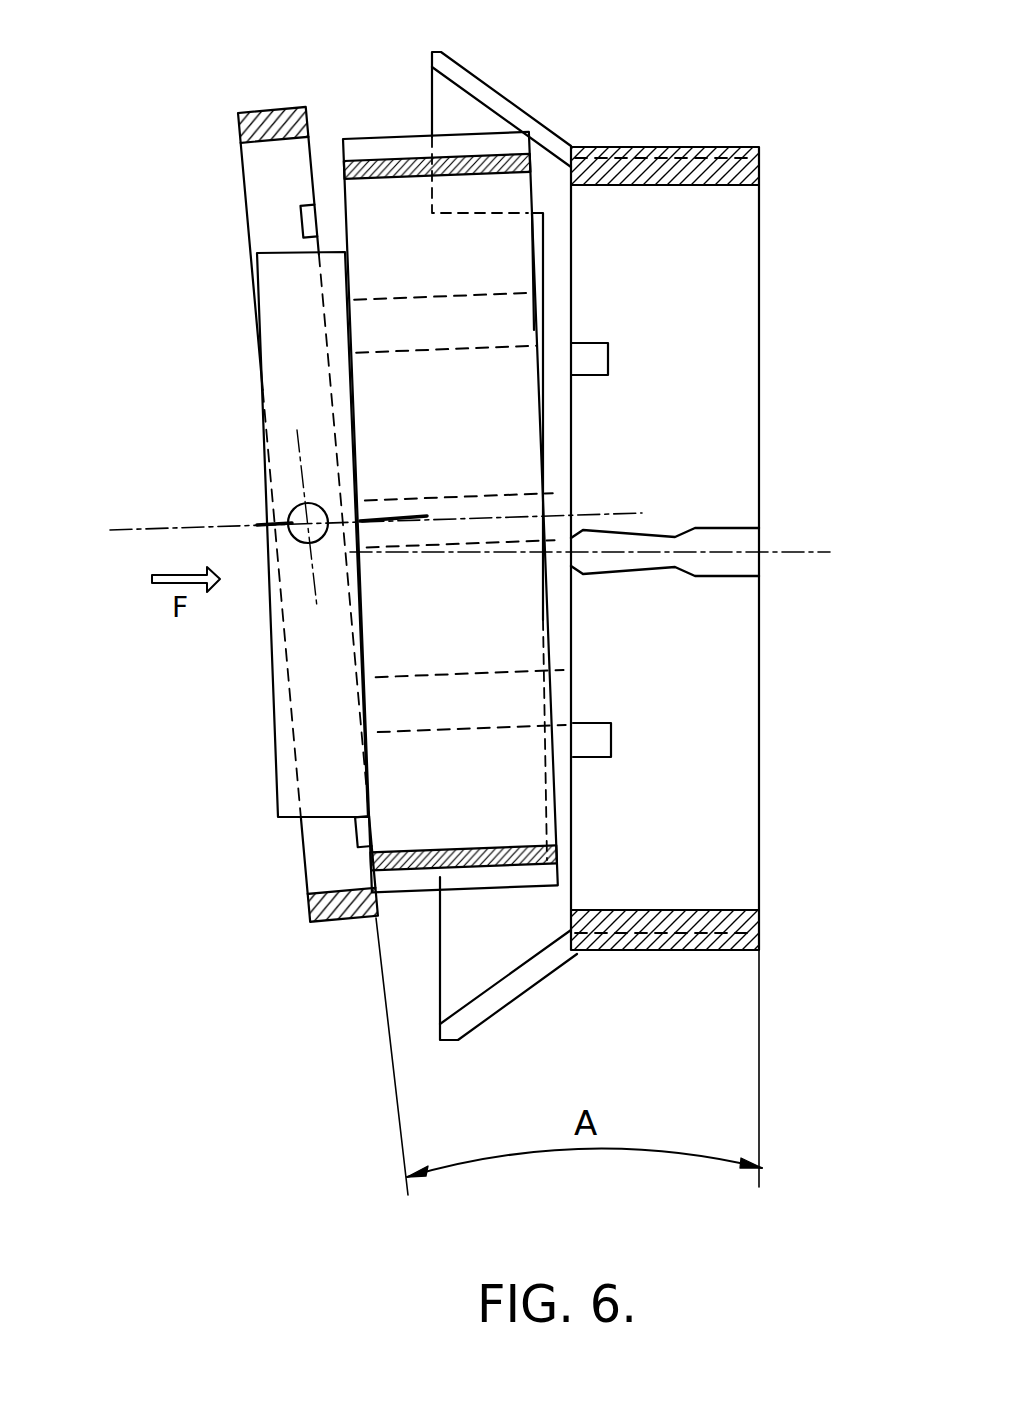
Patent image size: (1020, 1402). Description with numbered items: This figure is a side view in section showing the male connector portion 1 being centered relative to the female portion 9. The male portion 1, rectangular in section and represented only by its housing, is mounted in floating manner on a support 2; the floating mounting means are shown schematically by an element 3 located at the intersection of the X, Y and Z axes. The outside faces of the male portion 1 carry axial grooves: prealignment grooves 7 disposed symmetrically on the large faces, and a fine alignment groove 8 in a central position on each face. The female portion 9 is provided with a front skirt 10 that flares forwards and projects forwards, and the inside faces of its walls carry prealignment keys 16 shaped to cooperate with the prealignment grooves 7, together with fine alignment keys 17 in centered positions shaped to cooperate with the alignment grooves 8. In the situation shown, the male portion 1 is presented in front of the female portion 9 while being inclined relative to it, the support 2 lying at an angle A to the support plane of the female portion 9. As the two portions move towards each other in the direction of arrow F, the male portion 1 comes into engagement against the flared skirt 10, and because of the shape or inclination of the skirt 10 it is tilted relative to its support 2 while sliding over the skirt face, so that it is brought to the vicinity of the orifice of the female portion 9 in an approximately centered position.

The male connector portion 1 is at (288, 337).
The support 2 is at (255, 183).
The element 3 is at (307, 547).
The prealignment grooves 7 is at (437, 349).
The fine alignment groove 8 is at (392, 148).
The female portion 9 is at (760, 341).
The front skirt 10 is at (527, 110).
The prealignment keys 16 is at (585, 353).
The fine alignment keys 17 is at (650, 173).